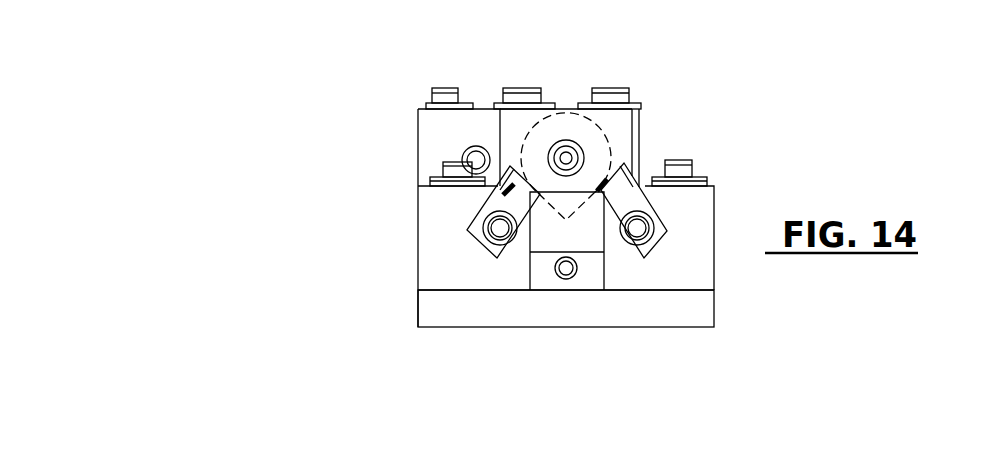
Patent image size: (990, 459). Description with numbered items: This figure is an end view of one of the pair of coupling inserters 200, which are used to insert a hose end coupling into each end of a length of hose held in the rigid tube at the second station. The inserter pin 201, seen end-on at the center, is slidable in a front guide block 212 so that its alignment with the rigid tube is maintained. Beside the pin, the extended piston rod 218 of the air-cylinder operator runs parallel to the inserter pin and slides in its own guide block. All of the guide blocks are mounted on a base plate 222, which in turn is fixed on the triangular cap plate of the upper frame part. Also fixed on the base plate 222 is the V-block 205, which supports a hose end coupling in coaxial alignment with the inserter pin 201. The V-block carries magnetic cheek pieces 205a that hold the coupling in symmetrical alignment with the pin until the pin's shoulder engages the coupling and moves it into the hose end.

The coupling inserter 200 is at (403, 286).
The inserter pin 201 is at (566, 158).
The V-block 205 is at (713, 205).
The magnetic cheek pieces 205a is at (503, 193).
The front guide block 212 is at (625, 128).
The extended piston rod 218 is at (465, 157).
The base plate 222 is at (580, 312).